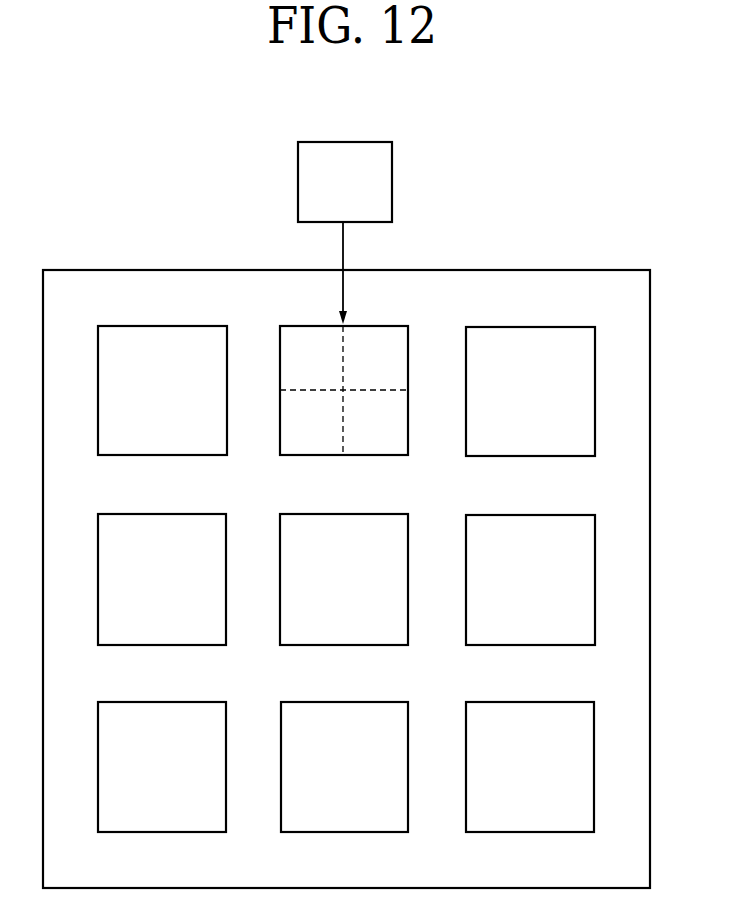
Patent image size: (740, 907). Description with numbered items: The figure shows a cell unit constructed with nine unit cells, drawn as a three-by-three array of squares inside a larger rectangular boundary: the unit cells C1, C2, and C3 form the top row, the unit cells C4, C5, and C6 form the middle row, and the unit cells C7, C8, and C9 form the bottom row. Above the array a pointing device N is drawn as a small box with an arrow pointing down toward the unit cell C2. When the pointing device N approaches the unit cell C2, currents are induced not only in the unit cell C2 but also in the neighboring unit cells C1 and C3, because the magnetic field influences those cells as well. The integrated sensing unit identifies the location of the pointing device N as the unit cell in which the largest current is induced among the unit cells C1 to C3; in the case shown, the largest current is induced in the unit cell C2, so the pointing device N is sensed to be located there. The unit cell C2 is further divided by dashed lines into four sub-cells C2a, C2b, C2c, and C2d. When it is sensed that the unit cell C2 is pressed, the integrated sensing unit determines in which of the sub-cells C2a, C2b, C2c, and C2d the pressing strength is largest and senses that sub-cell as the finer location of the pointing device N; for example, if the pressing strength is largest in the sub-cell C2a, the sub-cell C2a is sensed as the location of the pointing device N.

The pointing device N is at (345, 233).
The unit cell C1 is at (162, 390).
The unit cell C2 is at (344, 390).
The sub-cell C2a is at (313, 360).
The sub-cell C2b is at (375, 360).
The sub-cell C2c is at (312, 426).
The sub-cell C2d is at (375, 426).
The unit cell C3 is at (530, 391).
The unit cell C4 is at (162, 579).
The unit cell C5 is at (344, 579).
The unit cell C6 is at (530, 580).
The unit cell C7 is at (162, 767).
The unit cell C8 is at (344, 767).
The unit cell C9 is at (530, 767).